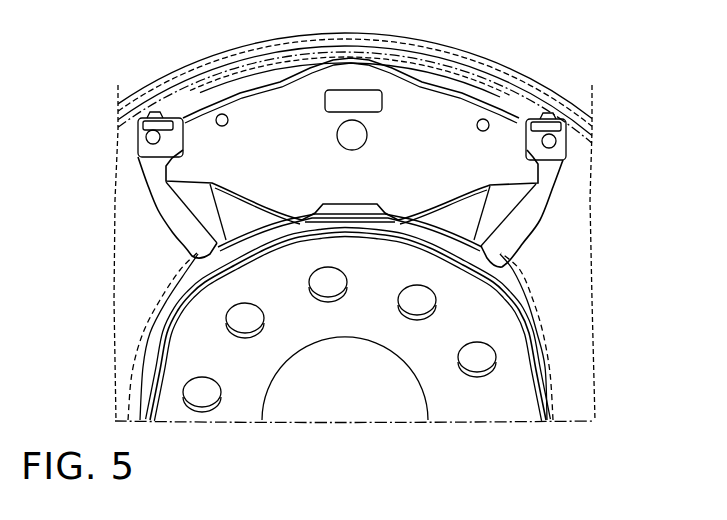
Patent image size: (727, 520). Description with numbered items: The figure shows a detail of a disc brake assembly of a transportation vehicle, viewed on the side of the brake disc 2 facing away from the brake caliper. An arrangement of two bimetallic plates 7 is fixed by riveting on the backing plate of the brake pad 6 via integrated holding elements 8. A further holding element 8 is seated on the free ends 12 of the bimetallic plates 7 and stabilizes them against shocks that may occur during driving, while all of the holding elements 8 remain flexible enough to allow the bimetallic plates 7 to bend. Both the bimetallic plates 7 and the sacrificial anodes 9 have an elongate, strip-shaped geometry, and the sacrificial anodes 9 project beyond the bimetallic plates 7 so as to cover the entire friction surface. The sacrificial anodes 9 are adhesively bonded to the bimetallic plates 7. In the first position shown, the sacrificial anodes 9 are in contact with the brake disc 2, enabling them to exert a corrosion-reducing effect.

The brake disc 2 is at (143, 243).
The brake pad 6 is at (169, 138).
The bimetallic plates 7 is at (160, 192).
The holding elements 8 is at (247, 248).
The sacrificial anodes 9 is at (153, 115).
The free ends 12 is at (180, 232).